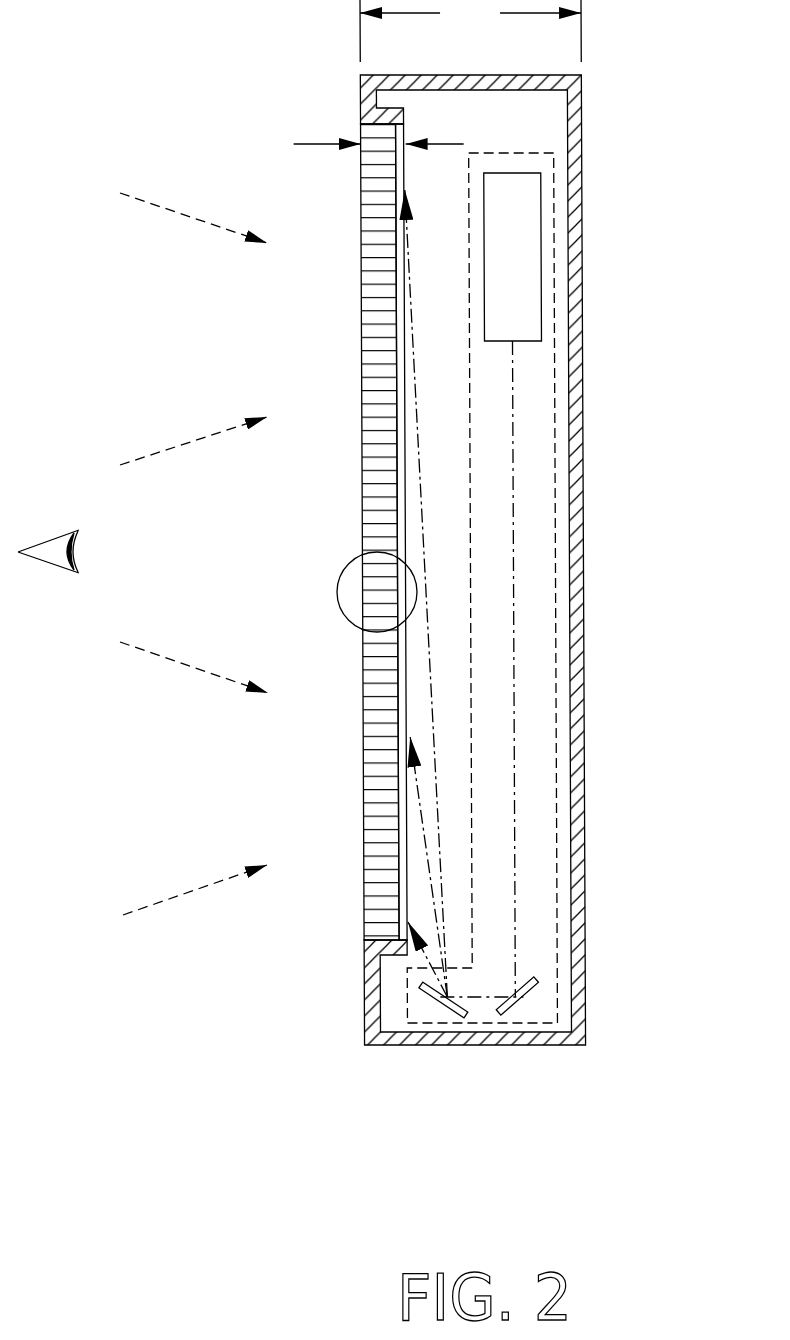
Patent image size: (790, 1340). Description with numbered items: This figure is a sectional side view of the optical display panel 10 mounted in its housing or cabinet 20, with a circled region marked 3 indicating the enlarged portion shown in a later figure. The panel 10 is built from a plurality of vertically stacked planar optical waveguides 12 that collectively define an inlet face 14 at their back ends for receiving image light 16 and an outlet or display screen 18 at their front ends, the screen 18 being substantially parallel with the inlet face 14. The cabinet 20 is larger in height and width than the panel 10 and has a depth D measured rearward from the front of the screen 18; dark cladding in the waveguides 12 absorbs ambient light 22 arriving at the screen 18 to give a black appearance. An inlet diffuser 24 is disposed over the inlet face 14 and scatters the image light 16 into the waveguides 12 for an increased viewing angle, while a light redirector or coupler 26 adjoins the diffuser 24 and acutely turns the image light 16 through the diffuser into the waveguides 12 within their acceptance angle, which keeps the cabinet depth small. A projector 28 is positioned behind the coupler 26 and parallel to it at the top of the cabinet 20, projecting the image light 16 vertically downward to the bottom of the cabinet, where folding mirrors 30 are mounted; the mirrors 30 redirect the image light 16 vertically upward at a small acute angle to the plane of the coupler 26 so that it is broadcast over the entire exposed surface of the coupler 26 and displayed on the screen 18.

The detail region shown in FIG. 3 is at (338, 605).
The optical display panel 10 is at (460, 559).
The planar optical waveguides 12 is at (363, 729).
The inlet face 14 is at (396, 508).
The image light 16 is at (516, 889).
The display screen 18 is at (360, 480).
The cabinet 20 is at (583, 632).
The ambient light 22 is at (178, 662).
The inlet diffuser 24 is at (365, 895).
The coupler 26 is at (432, 450).
The projector 28 is at (545, 272).
The folding mirrors 30 is at (520, 1000).